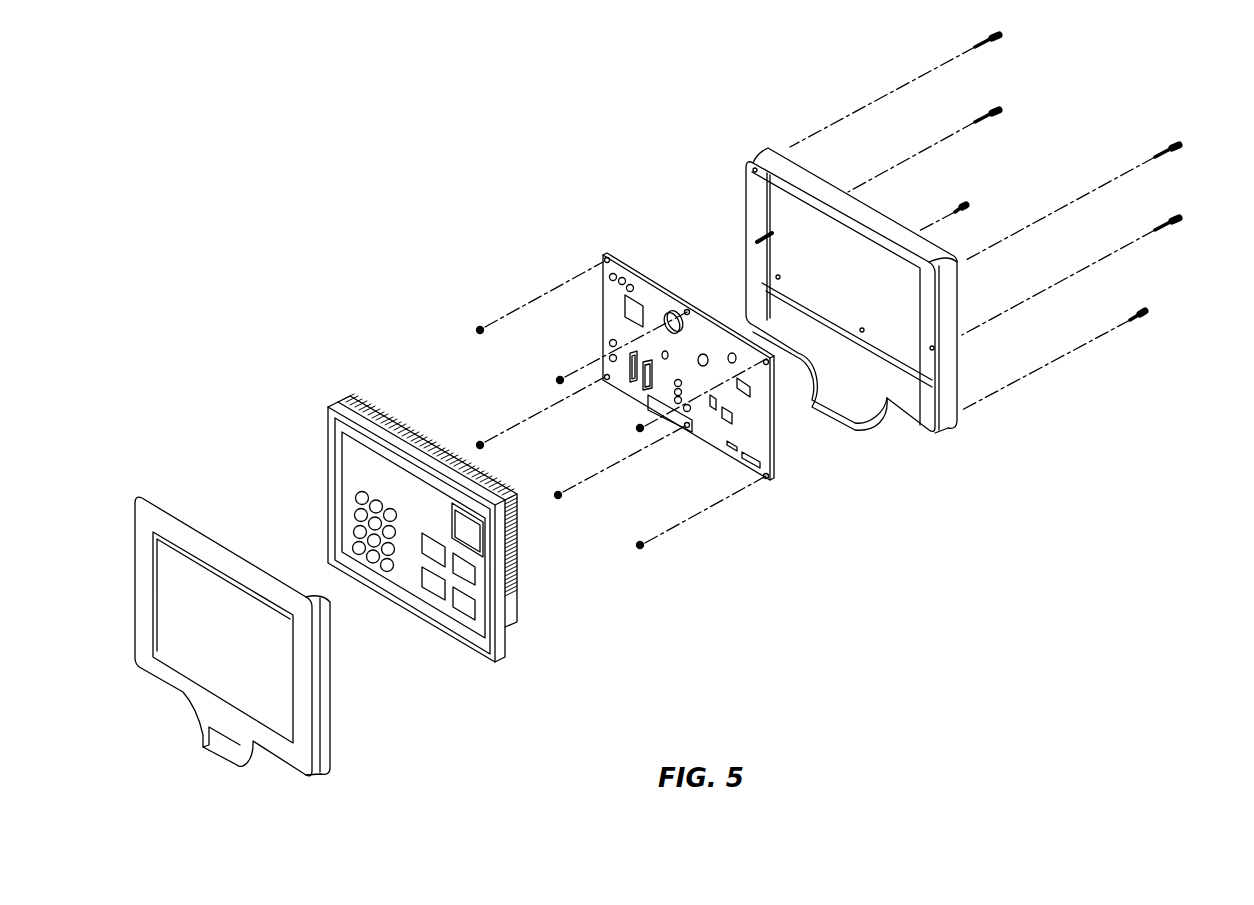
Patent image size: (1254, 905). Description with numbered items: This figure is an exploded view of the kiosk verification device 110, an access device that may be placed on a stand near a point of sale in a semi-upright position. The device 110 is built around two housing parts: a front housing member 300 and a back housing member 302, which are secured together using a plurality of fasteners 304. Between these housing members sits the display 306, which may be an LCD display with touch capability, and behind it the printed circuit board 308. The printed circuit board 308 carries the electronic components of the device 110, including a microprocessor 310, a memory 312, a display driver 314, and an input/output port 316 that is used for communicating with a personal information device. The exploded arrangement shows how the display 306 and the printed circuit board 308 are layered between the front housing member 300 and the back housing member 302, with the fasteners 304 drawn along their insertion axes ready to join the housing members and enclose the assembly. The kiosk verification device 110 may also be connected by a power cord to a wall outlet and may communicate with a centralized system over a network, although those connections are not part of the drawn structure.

The kiosk verification device 110 is at (370, 202).
The front housing member 300 is at (330, 765).
The back housing member 302 is at (948, 435).
The fasteners 304 is at (1145, 315).
The display 306 is at (510, 653).
The printed circuit board 308 is at (633, 268).
The microprocessor 310 is at (642, 308).
The memory 312 is at (628, 372).
The display driver 314 is at (667, 320).
The input/output port 316 is at (696, 437).